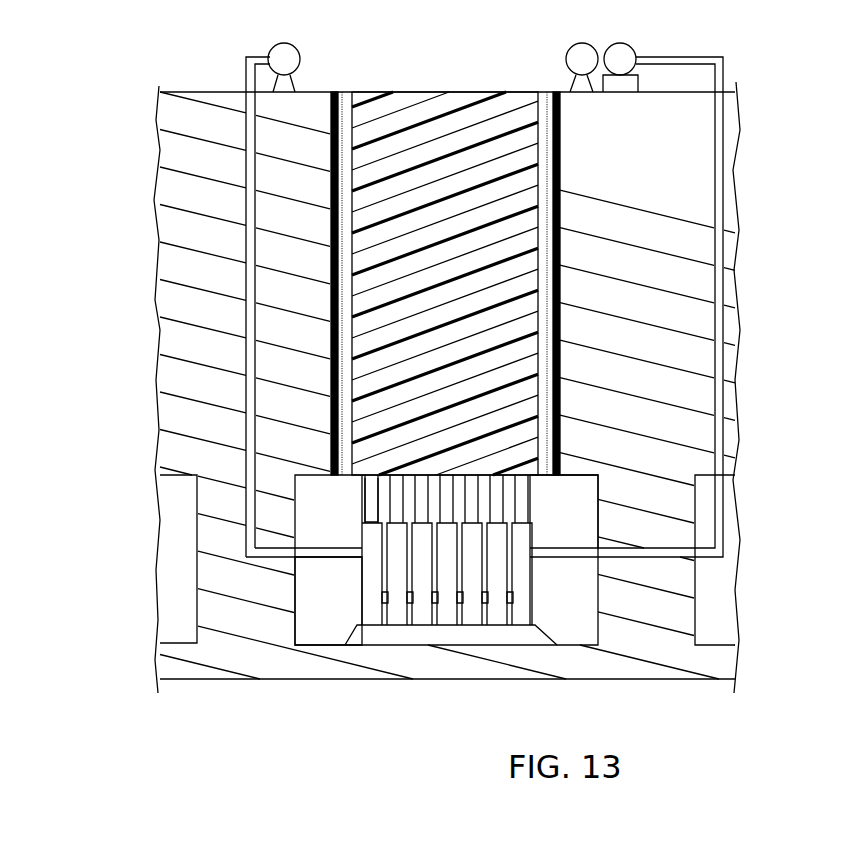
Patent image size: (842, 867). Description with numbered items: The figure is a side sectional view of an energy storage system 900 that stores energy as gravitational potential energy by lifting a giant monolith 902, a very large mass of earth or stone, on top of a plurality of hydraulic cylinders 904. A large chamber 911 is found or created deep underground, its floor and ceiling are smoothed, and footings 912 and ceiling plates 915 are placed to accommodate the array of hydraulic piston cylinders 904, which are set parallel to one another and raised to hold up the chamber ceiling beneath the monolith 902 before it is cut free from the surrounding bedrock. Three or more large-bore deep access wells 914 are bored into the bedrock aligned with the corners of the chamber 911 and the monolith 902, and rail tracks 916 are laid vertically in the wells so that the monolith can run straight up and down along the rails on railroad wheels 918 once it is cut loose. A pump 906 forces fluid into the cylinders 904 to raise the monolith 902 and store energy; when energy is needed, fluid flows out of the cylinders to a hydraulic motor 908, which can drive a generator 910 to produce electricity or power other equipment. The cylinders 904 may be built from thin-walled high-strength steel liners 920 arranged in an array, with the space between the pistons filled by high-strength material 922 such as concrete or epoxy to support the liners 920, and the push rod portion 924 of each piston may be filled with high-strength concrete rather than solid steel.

The energy storage system 900 is at (116, 271).
The giant monolith 902 is at (390, 107).
The hydraulic cylinders 904 is at (450, 607).
The pump 906 is at (286, 52).
The hydraulic motor 908 is at (618, 48).
The generator 910 is at (578, 52).
The large chamber 911 is at (573, 512).
The footings 912 is at (520, 636).
The deep access wells 914 is at (340, 92).
The ceiling plates 915 is at (357, 480).
The rail tracks 916 is at (330, 293).
The railroad wheels 918 is at (346, 219).
The steel liners 920 is at (364, 584).
The high-strength material 922 is at (508, 578).
The push rod portion 924 is at (372, 513).